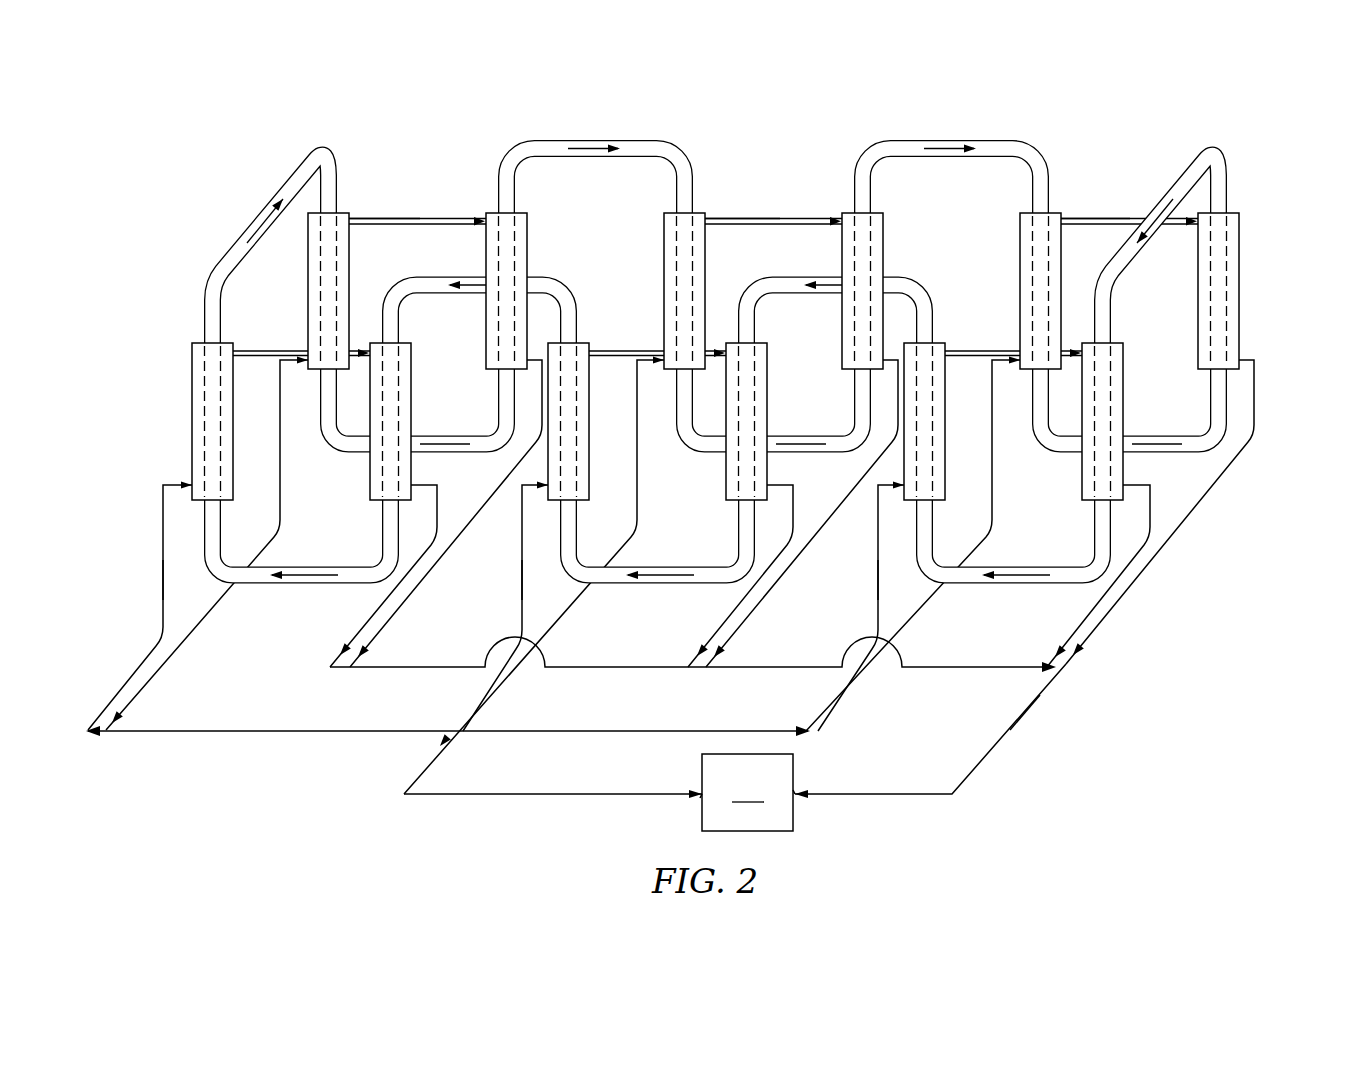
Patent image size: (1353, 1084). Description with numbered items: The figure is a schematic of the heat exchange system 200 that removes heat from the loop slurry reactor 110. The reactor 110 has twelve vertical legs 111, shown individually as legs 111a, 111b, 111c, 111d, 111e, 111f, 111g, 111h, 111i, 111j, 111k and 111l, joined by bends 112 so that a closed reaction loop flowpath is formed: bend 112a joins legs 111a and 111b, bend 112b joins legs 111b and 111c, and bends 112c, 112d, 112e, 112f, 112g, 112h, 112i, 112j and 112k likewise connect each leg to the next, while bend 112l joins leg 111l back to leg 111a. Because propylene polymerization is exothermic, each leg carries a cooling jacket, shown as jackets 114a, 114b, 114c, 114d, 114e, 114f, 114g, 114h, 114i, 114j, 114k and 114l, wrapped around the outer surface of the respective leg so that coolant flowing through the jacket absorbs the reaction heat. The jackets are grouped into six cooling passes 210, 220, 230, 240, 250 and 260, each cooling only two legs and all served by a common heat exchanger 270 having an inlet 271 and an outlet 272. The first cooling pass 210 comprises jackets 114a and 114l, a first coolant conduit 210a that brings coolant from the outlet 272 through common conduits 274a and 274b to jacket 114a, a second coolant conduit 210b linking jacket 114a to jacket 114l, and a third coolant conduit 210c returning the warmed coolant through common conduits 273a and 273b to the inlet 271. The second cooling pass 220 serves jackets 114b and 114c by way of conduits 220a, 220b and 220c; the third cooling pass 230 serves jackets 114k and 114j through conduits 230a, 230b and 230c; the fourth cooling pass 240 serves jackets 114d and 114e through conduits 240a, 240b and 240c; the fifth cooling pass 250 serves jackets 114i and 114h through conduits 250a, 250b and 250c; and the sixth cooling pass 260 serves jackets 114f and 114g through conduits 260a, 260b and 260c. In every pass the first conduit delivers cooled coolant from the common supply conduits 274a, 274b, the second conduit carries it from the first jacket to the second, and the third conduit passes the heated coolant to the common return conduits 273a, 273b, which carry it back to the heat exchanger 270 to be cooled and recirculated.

The loop slurry reactor 110 is at (711, 362).
The vertical legs 111 is at (711, 362).
The vertical leg 111a is at (224, 312).
The vertical leg 111b is at (350, 236).
The vertical leg 111c is at (520, 200).
The vertical leg 111d is at (706, 237).
The vertical leg 111e is at (878, 200).
The vertical leg 111f is at (1061, 236).
The vertical leg 111g is at (1240, 282).
The vertical leg 111h is at (1102, 305).
The vertical leg 111i is at (940, 300).
The vertical leg 111j is at (738, 520).
The vertical leg 111k is at (585, 300).
The vertical leg 111l is at (385, 520).
The bends 112 is at (655, 362).
The bend 112a is at (257, 215).
The bend 112b is at (450, 432).
The bend 112c is at (590, 137).
The bend 112d is at (820, 432).
The bend 112e is at (945, 137).
The bend 112f is at (1160, 432).
The bend 112g is at (1182, 158).
The bend 112h is at (1018, 588).
The bend 112i is at (918, 270).
The bend 112j is at (670, 588).
The bend 112k is at (553, 277).
The bend 112l is at (305, 588).
The cooling jacket 114a is at (192, 395).
The cooling jacket 114b is at (308, 268).
The cooling jacket 114c is at (486, 258).
The cooling jacket 114d is at (664, 256).
The cooling jacket 114e is at (842, 262).
The cooling jacket 114f is at (1020, 262).
The cooling jacket 114g is at (1240, 245).
The cooling jacket 114h is at (1124, 378).
The cooling jacket 114i is at (946, 450).
The cooling jacket 114j is at (768, 383).
The cooling jacket 114k is at (590, 452).
The cooling jacket 114l is at (370, 490).
The heat exchange system 200 is at (1075, 705).
The first cooling pass 210 is at (135, 612).
The first coolant conduit 210a is at (158, 570).
The second coolant conduit 210b is at (270, 346).
The third coolant conduit 210c is at (442, 507).
The second cooling pass 220 is at (400, 122).
The first coolant conduit 220a is at (282, 458).
The second coolant conduit 220b is at (405, 214).
The third coolant conduit 220c is at (502, 490).
The third cooling pass 230 is at (490, 598).
The first coolant conduit 230a is at (518, 568).
The second coolant conduit 230b is at (628, 346).
The third coolant conduit 230c is at (796, 505).
The fourth cooling pass 240 is at (757, 122).
The first coolant conduit 240a is at (640, 455).
The second coolant conduit 240b is at (765, 214).
The third coolant conduit 240c is at (838, 510).
The fifth cooling pass 250 is at (845, 612).
The first coolant conduit 250a is at (873, 570).
The second coolant conduit 250b is at (984, 346).
The third coolant conduit 250c is at (1152, 507).
The sixth cooling pass 260 is at (1092, 122).
The first coolant conduit 260a is at (996, 455).
The second coolant conduit 260b is at (1100, 214).
The third coolant conduit 260c is at (1255, 395).
The heat exchanger 270 is at (747, 792).
The inlet 271 is at (800, 786).
The outlet 272 is at (700, 802).
The common conduit 273a is at (600, 670).
The common conduit 273b is at (964, 780).
The common conduit 274a is at (560, 797).
The common conduit 274b is at (228, 728).